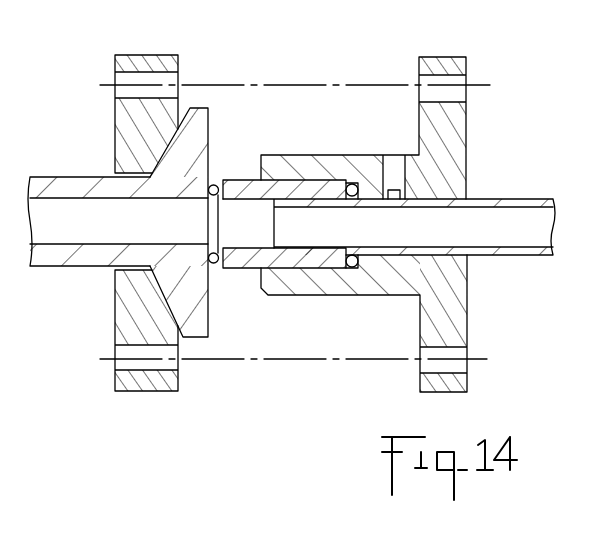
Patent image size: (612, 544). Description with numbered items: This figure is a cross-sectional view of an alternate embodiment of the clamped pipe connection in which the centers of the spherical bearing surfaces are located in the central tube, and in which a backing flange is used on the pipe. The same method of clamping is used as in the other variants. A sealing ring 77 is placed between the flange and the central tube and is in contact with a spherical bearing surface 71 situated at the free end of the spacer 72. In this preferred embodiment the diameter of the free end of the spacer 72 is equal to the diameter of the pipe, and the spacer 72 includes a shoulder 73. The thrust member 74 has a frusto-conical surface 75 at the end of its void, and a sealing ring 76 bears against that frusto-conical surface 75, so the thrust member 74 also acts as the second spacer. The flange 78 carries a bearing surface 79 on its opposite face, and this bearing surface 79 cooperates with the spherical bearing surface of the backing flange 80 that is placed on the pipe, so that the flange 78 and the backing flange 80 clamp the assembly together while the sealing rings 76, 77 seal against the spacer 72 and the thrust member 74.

The spherical bearing surface 71 is at (204, 182).
The spacer 72 is at (238, 182).
The shoulder 73 is at (247, 249).
The thrust member 74 is at (372, 168).
The frusto-conical surface 75 is at (356, 267).
The sealing ring 76 is at (354, 184).
The sealing ring 77 is at (216, 263).
The flange 78 is at (202, 117).
The bearing surface 79 is at (152, 155).
The backing flange 80 is at (132, 72).